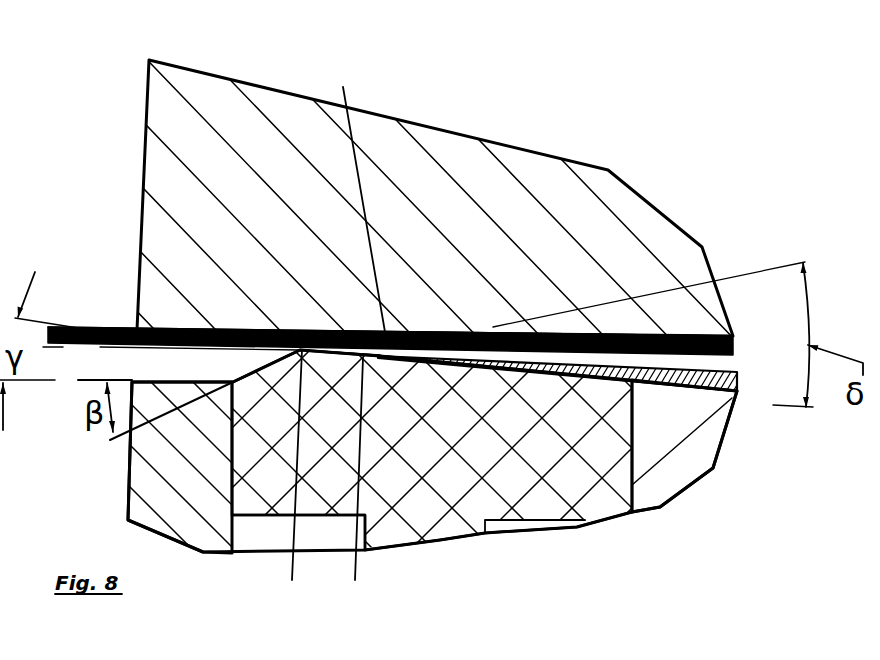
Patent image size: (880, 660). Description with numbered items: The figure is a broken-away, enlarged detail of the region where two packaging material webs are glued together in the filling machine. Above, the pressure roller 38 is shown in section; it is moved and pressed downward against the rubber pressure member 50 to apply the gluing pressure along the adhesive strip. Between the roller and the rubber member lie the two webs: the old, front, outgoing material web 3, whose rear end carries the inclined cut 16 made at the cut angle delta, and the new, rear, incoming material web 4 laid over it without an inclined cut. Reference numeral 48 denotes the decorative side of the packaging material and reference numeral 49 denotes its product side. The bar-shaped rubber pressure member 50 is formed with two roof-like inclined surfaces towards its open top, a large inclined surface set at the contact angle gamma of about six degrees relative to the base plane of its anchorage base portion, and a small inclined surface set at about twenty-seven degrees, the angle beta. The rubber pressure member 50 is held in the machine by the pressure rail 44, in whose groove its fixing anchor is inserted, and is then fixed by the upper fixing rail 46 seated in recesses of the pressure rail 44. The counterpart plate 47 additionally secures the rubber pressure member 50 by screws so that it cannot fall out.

The material web 3 is at (582, 413).
The material web 4 is at (113, 328).
The inclined cut 16 is at (356, 190).
The pressure roller 38 is at (448, 147).
The pressure rail 44 is at (668, 483).
The upper fixing rail 46 is at (298, 568).
The counterpart plate 47 is at (167, 468).
The decorative side 48 is at (88, 328).
The product side 49 is at (206, 411).
The rubber pressure member 50 is at (572, 473).